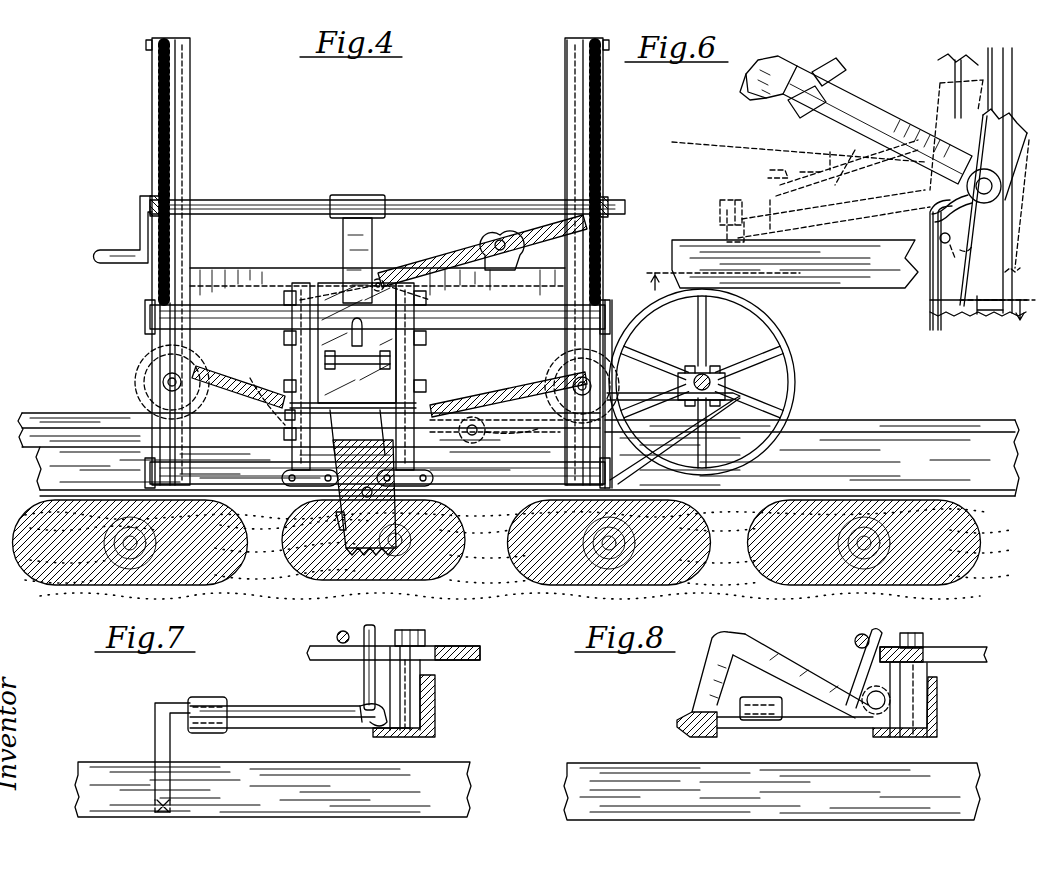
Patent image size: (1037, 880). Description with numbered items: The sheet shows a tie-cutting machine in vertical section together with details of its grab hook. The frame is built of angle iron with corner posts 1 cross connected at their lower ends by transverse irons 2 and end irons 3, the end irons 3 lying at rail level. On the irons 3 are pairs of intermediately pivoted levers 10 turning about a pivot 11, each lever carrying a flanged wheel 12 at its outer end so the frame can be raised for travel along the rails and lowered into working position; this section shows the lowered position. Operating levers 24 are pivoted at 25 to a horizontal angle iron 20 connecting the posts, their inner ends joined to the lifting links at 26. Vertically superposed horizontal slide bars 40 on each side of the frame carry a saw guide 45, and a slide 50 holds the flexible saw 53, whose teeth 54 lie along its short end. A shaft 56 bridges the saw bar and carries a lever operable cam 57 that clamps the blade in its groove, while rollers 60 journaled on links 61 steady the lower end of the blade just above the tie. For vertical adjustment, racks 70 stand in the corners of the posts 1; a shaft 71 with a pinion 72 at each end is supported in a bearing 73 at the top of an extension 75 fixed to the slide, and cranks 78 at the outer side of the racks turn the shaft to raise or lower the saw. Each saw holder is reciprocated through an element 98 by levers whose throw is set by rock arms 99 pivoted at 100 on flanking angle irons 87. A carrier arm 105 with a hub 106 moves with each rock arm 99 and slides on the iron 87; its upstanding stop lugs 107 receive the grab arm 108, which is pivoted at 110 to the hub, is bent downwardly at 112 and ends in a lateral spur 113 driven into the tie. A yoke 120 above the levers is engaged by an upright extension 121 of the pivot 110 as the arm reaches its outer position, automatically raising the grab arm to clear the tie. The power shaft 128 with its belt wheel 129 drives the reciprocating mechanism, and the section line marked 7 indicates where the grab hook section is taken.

In FIG. 4, the corner posts 1 is at (155, 118).
In FIG. 4, the transverse irons 2 is at (150, 455).
In FIG. 4, the end irons 3 is at (496, 410).
In FIG. 4, the intermediately pivoted levers 10 is at (220, 387).
In FIG. 4, the pivot 11 is at (262, 400).
In FIG. 4, the flanged wheel 12 is at (135, 380).
In FIG. 4, the angle iron 20 is at (248, 268).
In FIG. 4, the operating levers 24 is at (472, 245).
In FIG. 4, the pivot 25 is at (501, 240).
In FIG. 4, the pivotal connection 26 is at (380, 280).
In FIG. 4, the slide bars 40 is at (532, 322).
In FIG. 4, the saw guide 45 is at (405, 378).
In FIG. 4, the slide 50 is at (298, 343).
In FIG. 4, the saw 53 is at (338, 524).
In FIG. 4, the teeth 54 is at (362, 552).
In FIG. 4, the shaft 56 is at (378, 360).
In FIG. 4, the lever operable cam 57 is at (352, 300).
In FIG. 4, the rollers 60 is at (366, 492).
In FIG. 4, the links 61 is at (308, 488).
In FIG. 4, the racks 70 is at (172, 108).
In FIG. 4, the shaft 71 is at (278, 200).
In FIG. 4, the pinion 72 is at (157, 200).
In FIG. 4, the bearing 73 is at (352, 195).
In FIG. 4, the extension 75 is at (345, 226).
In FIG. 4, the cranks 78 is at (140, 218).
In FIG. 6, the angle irons 87 is at (965, 78).
In FIG. 7, the angle irons 87 is at (435, 712).
In FIG. 8, the angle irons 87 is at (937, 704).
In FIG. 4, the element of saw holder 98 is at (418, 402).
In FIG. 6, the rock arms 99 is at (953, 318).
In FIG. 7, the rock arms 99 is at (480, 652).
In FIG. 8, the rock arms 99 is at (967, 647).
In FIG. 6, the pivot 100 is at (970, 180).
In FIG. 7, the pivot 100 is at (425, 630).
In FIG. 8, the pivot 100 is at (915, 632).
In FIG. 6, the carrier arm 105 is at (870, 92).
In FIG. 7, the carrier arm 105 is at (303, 726).
In FIG. 8, the carrier arm 105 is at (795, 728).
In FIG. 7, the hub 106 is at (425, 670).
In FIG. 6, the stop lugs 107 is at (832, 66).
In FIG. 7, the stop lugs 107 is at (220, 696).
In FIG. 8, the stop lugs 107 is at (760, 690).
In FIG. 6, the grab arm 108 is at (835, 160).
In FIG. 7, the grab arm 108 is at (290, 705).
In FIG. 8, the grab arm 108 is at (790, 662).
In FIG. 7, the pivot 110 is at (365, 706).
In FIG. 8, the pivot 110 is at (876, 710).
In FIG. 6, the bent portion 112 is at (765, 60).
In FIG. 7, the bent portion 112 is at (155, 738).
In FIG. 8, the bent portion 112 is at (705, 678).
In FIG. 6, the terminal spur 113 is at (744, 86).
In FIG. 7, the terminal spur 113 is at (172, 808).
In FIG. 8, the terminal spur 113 is at (680, 725).
In FIG. 6, the yoke 120 is at (930, 322).
In FIG. 7, the yoke 120 is at (336, 636).
In FIG. 6, the upright extension 121 is at (950, 246).
In FIG. 7, the upright extension 121 is at (375, 632).
In FIG. 8, the upright extension 121 is at (866, 650).
In FIG. 4, the shaft 128 is at (706, 378).
In FIG. 4, the belt wheel 129 is at (797, 372).
In FIG. 6, the section line 7 is at (839, 297).